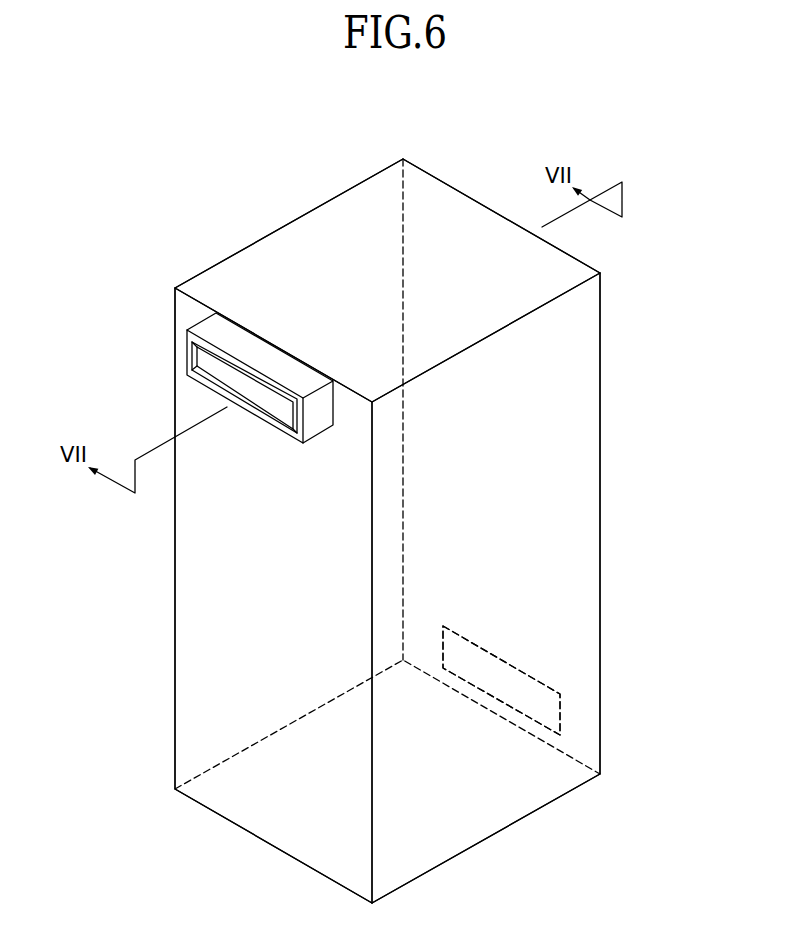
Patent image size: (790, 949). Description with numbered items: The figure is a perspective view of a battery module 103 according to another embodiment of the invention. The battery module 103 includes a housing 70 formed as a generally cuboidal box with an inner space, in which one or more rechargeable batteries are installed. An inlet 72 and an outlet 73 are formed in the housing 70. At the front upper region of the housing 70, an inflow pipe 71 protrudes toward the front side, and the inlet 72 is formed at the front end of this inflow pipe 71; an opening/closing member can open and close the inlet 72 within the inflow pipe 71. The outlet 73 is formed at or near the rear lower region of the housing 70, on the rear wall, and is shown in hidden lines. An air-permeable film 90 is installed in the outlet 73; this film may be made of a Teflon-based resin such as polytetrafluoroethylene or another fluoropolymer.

The battery module 103 is at (312, 198).
The housing 70 is at (603, 427).
The inflow pipe 71 is at (212, 366).
The inlet 72 is at (216, 380).
The outlet 73 is at (502, 658).
The air-permeable film 90 is at (515, 692).